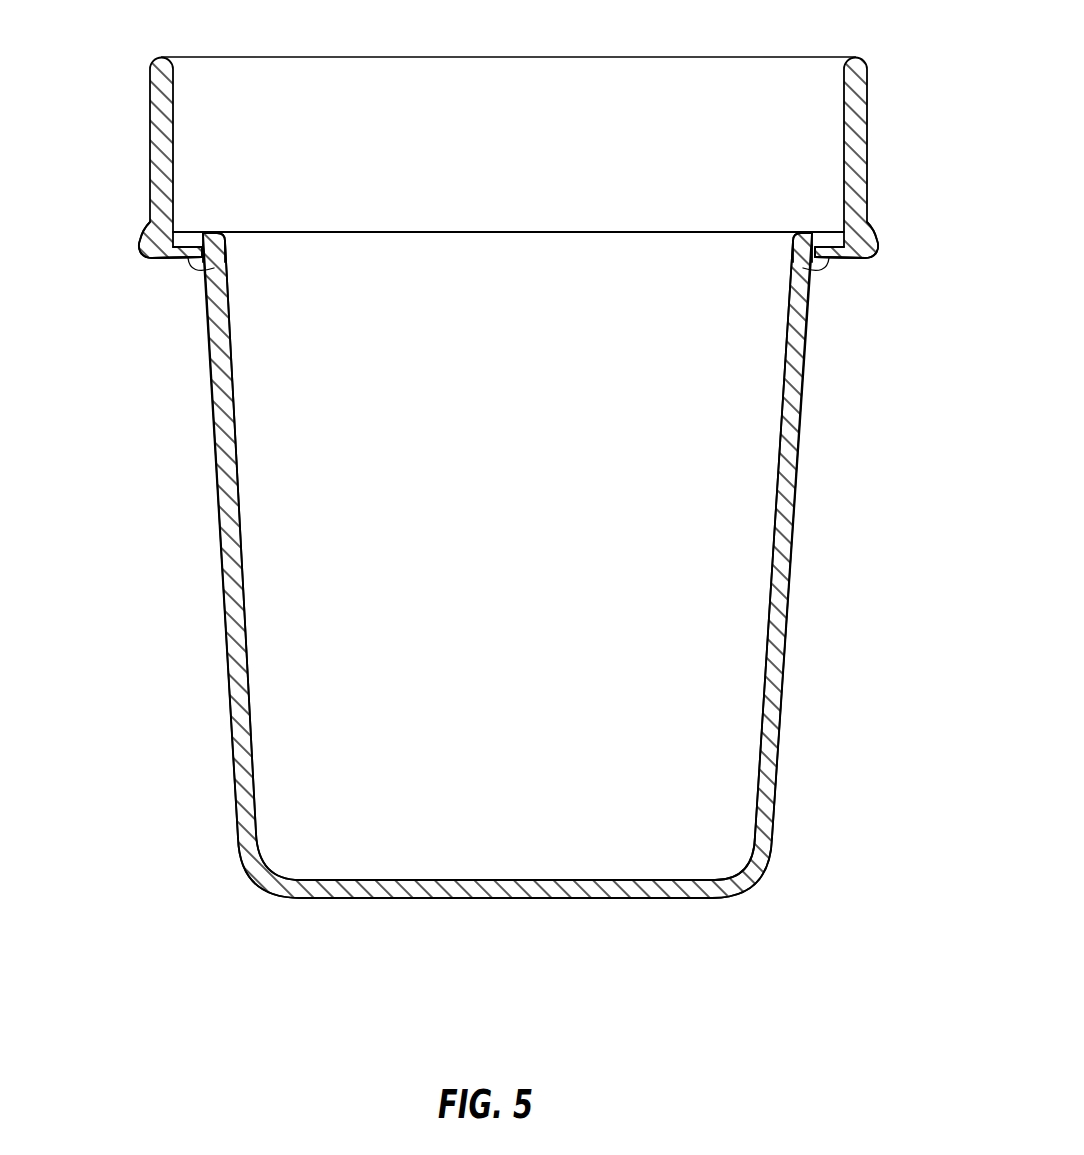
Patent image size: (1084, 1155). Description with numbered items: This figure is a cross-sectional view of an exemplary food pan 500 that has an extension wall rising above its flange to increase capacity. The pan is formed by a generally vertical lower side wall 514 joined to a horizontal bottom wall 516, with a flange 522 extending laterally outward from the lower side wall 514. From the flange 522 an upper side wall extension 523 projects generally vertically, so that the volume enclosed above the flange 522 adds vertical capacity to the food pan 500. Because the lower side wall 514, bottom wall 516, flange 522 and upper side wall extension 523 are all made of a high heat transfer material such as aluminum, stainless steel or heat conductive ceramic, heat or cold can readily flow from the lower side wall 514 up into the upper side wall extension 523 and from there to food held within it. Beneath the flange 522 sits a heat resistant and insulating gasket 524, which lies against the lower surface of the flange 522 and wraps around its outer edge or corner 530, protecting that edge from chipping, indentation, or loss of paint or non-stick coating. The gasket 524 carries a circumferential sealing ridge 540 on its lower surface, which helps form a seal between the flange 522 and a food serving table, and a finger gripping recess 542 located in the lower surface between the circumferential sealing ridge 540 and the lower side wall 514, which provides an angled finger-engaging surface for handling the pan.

The food pan 500 is at (167, 665).
The lower side wall 514 is at (784, 554).
The bottom wall 516 is at (636, 897).
The flange 522 is at (185, 233).
The upper side wall extension 523 is at (150, 146).
The gasket 524 is at (141, 256).
The outer edge or corner 530 is at (144, 234).
The circumferential sealing ridge 540 is at (165, 265).
The finger gripping recess 542 is at (206, 268).